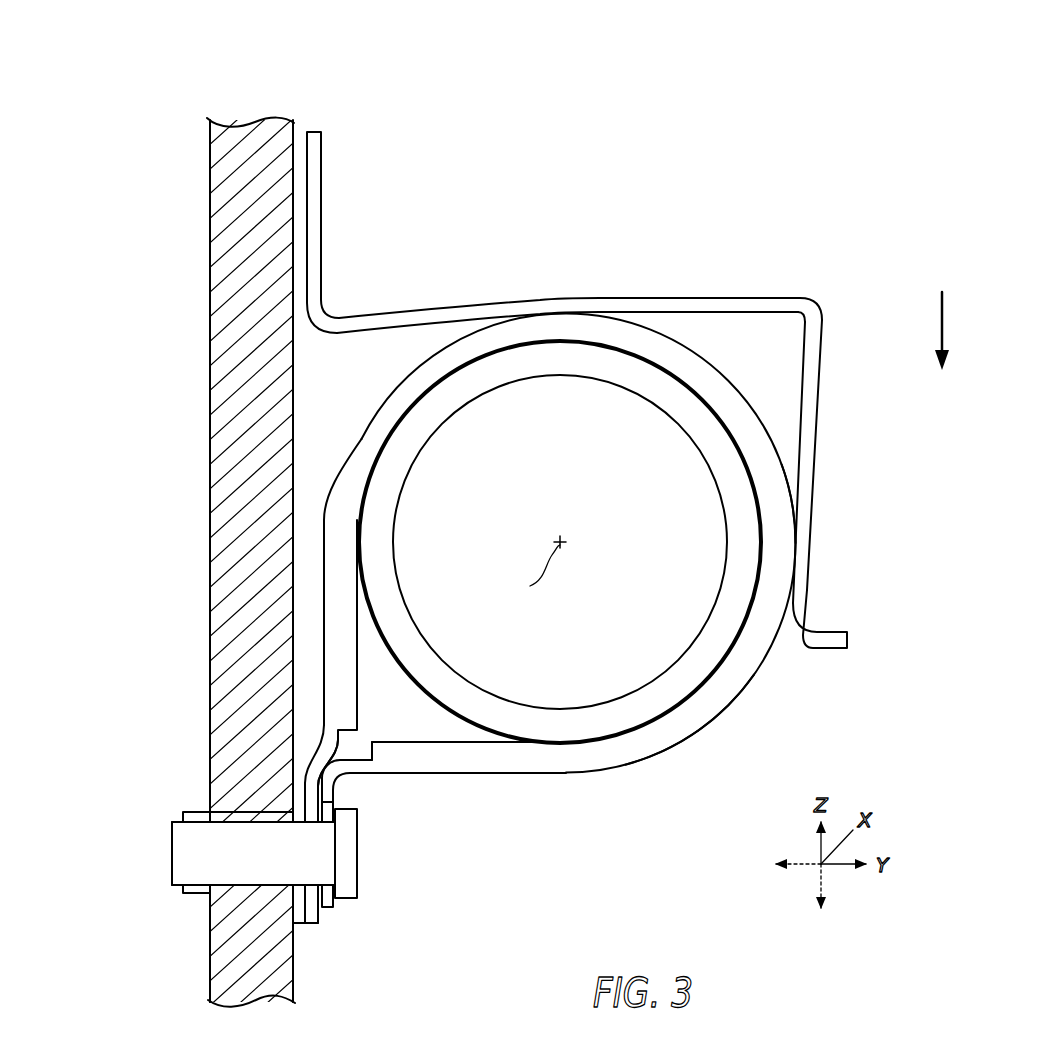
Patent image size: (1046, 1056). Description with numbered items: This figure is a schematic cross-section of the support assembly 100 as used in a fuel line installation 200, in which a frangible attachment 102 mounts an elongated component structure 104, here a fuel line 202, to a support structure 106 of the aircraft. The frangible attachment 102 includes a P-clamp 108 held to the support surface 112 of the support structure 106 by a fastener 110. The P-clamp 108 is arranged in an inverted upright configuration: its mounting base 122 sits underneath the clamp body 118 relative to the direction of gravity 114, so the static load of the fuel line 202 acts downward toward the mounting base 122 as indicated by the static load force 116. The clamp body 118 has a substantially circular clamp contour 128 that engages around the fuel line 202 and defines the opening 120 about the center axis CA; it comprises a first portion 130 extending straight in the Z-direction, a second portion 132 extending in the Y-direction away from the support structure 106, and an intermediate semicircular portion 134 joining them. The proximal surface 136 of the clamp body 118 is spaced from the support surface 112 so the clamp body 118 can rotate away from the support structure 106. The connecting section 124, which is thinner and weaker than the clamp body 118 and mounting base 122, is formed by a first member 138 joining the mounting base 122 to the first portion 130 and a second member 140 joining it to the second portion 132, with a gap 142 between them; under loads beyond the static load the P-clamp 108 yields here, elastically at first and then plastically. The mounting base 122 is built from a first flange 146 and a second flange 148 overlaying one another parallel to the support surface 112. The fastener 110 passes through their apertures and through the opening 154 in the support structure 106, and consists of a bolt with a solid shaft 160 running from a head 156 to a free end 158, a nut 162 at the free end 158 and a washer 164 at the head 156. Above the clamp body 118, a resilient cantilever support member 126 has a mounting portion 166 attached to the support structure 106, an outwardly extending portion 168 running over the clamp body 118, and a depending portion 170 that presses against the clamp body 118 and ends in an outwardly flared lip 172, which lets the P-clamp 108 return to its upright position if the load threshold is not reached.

The support assembly 100 is at (524, 63).
The fuel line installation 200 is at (478, 104).
The frangible attachment 102 is at (470, 827).
The elongated component structure 104 is at (488, 802).
The fuel line 202 is at (605, 775).
The support structure 106 is at (247, 195).
The P-clamp 108 is at (703, 772).
The fastener 110 is at (259, 858).
The support surface 112 is at (295, 988).
The direction of gravity 114 is at (901, 307).
The static load force 116 is at (940, 316).
The clamp body 118 is at (737, 698).
The opening 120 is at (654, 515).
The mounting base 122 is at (319, 937).
The connecting section 124 is at (343, 784).
The support member 126 is at (812, 298).
The clamp contour 128 is at (363, 608).
The first portion 130 is at (355, 428).
The second portion 132 is at (710, 722).
The semicircular portion 134 is at (780, 458).
The proximal surface 136 is at (320, 588).
The first member 138 is at (315, 750).
The second member 140 is at (348, 796).
The gap 142 is at (354, 740).
The first flange 146 is at (230, 972).
The second flange 148 is at (322, 915).
The opening 154 is at (232, 820).
The head 156 is at (358, 878).
The free end 158 is at (172, 852).
The shaft 160 is at (208, 850).
The nut 162 is at (195, 893).
The washer 164 is at (335, 905).
The mounting portion 166 is at (322, 190).
The outwardly extending portion 168 is at (607, 298).
The depending portion 170 is at (815, 488).
The outwardly flared lip 172 is at (835, 630).